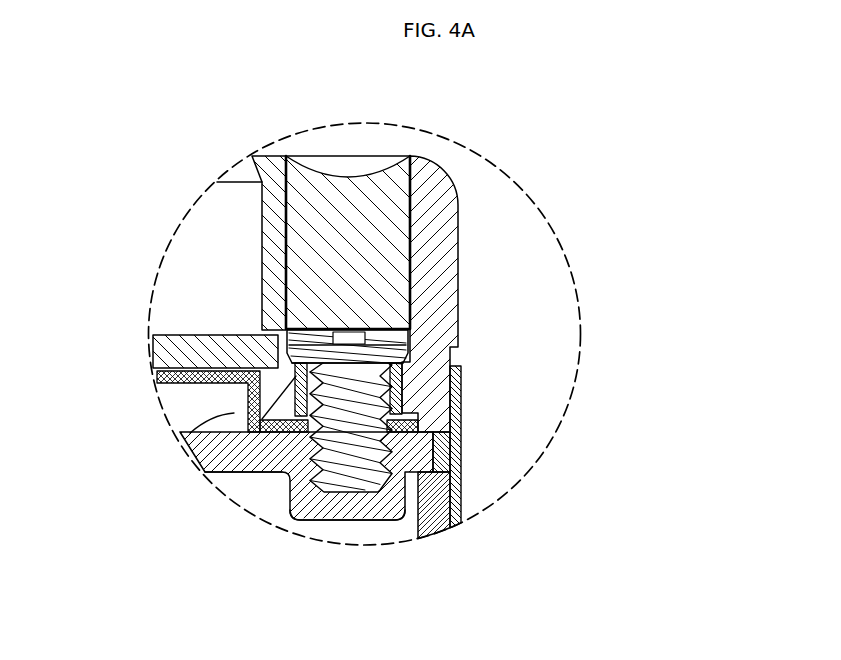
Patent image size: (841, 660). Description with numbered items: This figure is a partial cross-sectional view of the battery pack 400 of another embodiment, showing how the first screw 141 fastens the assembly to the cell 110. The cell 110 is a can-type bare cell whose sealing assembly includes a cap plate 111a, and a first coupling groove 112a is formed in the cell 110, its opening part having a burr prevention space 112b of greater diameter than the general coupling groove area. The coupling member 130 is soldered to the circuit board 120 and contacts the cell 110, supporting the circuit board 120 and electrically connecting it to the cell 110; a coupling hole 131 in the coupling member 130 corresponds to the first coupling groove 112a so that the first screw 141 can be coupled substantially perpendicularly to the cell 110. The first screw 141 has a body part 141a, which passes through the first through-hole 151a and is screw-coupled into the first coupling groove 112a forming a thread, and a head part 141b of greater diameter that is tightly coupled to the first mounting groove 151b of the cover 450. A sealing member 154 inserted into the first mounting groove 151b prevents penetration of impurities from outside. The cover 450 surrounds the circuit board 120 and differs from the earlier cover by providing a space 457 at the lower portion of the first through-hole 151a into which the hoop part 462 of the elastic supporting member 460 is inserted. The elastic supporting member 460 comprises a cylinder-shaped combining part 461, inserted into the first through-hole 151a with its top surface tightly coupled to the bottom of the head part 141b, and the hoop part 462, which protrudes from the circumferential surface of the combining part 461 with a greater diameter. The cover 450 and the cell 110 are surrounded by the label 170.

The battery pack 400 is at (505, 162).
The cover 450 is at (432, 188).
The first mounting groove 151b is at (273, 287).
The sealing member 154 is at (357, 202).
The first screw 141 is at (519, 337).
The body part 141a is at (408, 360).
The head part 141b is at (413, 326).
The circuit board 120 is at (186, 362).
The first through-hole 151a is at (296, 406).
The space 457 is at (250, 414).
The elastic supporting member 460 is at (513, 404).
The combining part 461 is at (402, 383).
The hoop part 462 is at (418, 416).
The cap plate 111a is at (329, 496).
The coupling member 130 is at (198, 445).
The coupling hole 131 is at (252, 462).
The first coupling groove 112a is at (360, 493).
The cell 110 is at (534, 470).
The label 170 is at (460, 443).
The burr prevention space 112b is at (460, 473).